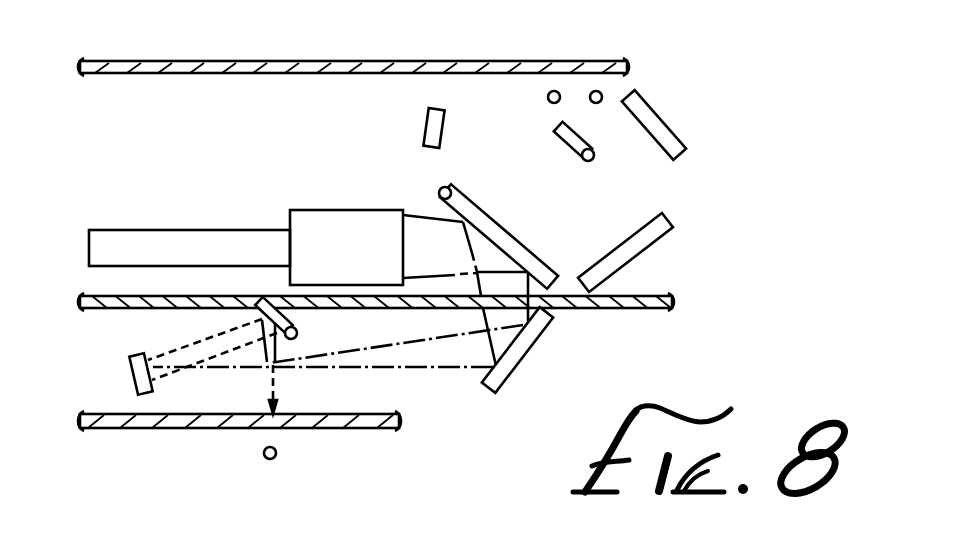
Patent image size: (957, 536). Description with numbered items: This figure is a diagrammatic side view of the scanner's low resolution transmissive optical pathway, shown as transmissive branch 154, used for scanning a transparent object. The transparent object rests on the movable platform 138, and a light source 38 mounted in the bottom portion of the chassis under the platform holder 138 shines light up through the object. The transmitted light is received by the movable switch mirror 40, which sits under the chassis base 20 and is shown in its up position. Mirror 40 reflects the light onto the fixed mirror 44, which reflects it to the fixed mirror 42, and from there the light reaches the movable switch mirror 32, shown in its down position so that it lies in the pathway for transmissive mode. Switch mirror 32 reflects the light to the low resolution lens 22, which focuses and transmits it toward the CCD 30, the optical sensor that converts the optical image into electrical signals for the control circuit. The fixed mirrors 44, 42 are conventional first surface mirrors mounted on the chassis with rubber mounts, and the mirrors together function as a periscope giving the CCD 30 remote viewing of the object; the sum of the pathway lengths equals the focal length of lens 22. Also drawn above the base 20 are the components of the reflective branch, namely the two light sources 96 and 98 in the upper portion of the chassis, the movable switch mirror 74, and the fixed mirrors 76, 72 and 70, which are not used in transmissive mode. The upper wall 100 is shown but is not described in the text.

The chassis base 20 is at (613, 308).
The low resolution lens 22 is at (335, 230).
The CCD 30 is at (133, 243).
The optical switch mirror 32 is at (490, 213).
The light source 38 is at (277, 457).
The movable switch mirror 40 is at (298, 327).
The fixed mirror 42 is at (522, 363).
The fixed mirror 44 is at (128, 368).
The fixed mirror 70 is at (650, 248).
The fixed mirror 72 is at (668, 123).
The movable switch mirror 74 is at (563, 142).
The fixed mirror 76 is at (425, 128).
The light source 96 is at (547, 97).
The light source 98 is at (603, 95).
The housing wall 100 is at (387, 60).
The movable platform 138 is at (142, 423).
The transmissive branch 154 is at (438, 391).